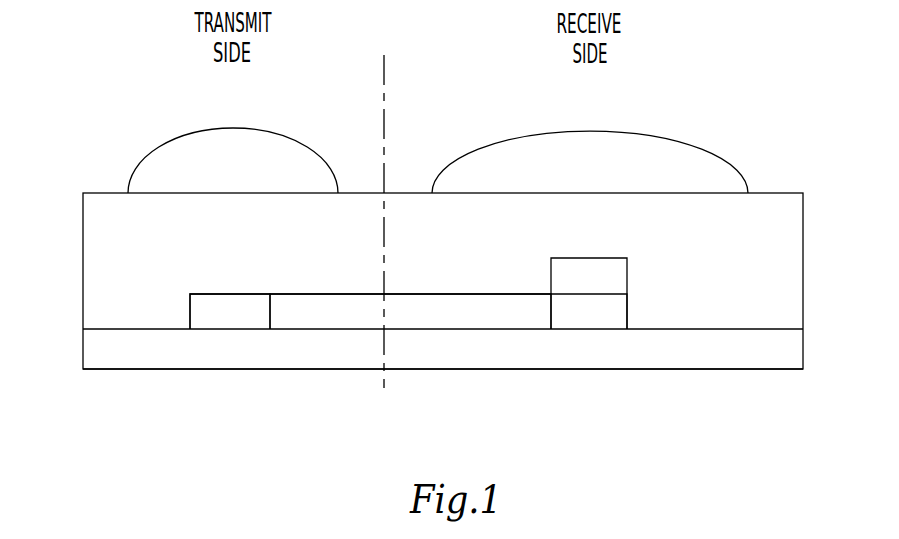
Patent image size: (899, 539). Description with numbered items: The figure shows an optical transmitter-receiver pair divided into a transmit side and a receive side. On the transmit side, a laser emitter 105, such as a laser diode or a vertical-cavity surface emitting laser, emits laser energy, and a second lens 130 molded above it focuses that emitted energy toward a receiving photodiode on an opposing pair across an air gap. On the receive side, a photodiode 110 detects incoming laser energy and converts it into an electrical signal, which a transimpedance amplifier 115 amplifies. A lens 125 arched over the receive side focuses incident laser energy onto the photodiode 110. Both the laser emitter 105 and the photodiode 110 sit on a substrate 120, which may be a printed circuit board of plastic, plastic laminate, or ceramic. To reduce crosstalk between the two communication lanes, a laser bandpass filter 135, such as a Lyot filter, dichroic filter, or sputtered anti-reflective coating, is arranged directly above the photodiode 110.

The laser emitter 105 is at (216, 317).
The photodiode 110 is at (627, 312).
The transimpedance amplifier 115 is at (330, 318).
The substrate 120 is at (442, 343).
The lens 125 is at (587, 132).
The second lens 130 is at (232, 130).
The laser bandpass filter 135 is at (627, 276).